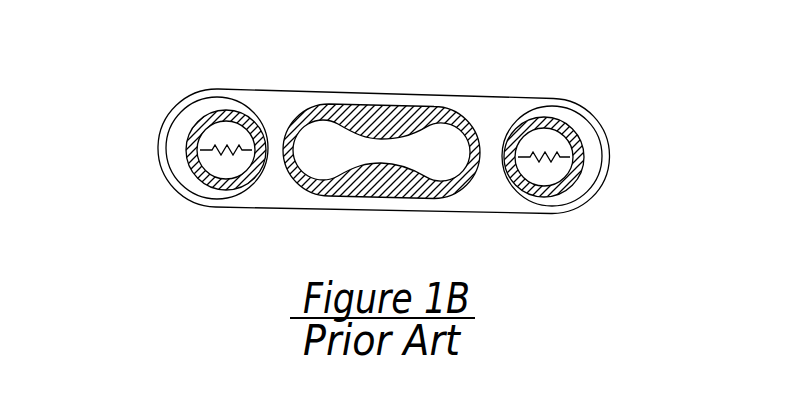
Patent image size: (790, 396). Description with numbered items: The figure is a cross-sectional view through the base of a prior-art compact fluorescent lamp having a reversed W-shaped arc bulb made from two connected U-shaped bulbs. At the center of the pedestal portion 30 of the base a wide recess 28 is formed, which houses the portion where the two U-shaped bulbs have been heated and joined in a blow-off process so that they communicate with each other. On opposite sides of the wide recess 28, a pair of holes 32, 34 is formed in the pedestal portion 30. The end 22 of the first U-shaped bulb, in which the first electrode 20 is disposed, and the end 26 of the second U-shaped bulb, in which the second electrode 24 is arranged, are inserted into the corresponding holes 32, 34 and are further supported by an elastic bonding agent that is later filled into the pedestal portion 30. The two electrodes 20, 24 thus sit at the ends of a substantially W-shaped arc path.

The first electrode 20 is at (217, 165).
The one end of the first U-shaped bulb 22 is at (221, 117).
The second electrode 24 is at (547, 173).
The other end of the second U-shaped bulb 26 is at (551, 122).
The wide recess 28 is at (382, 108).
The pedestal portion 30 is at (467, 94).
The hole 32 is at (172, 116).
The hole 34 is at (596, 124).